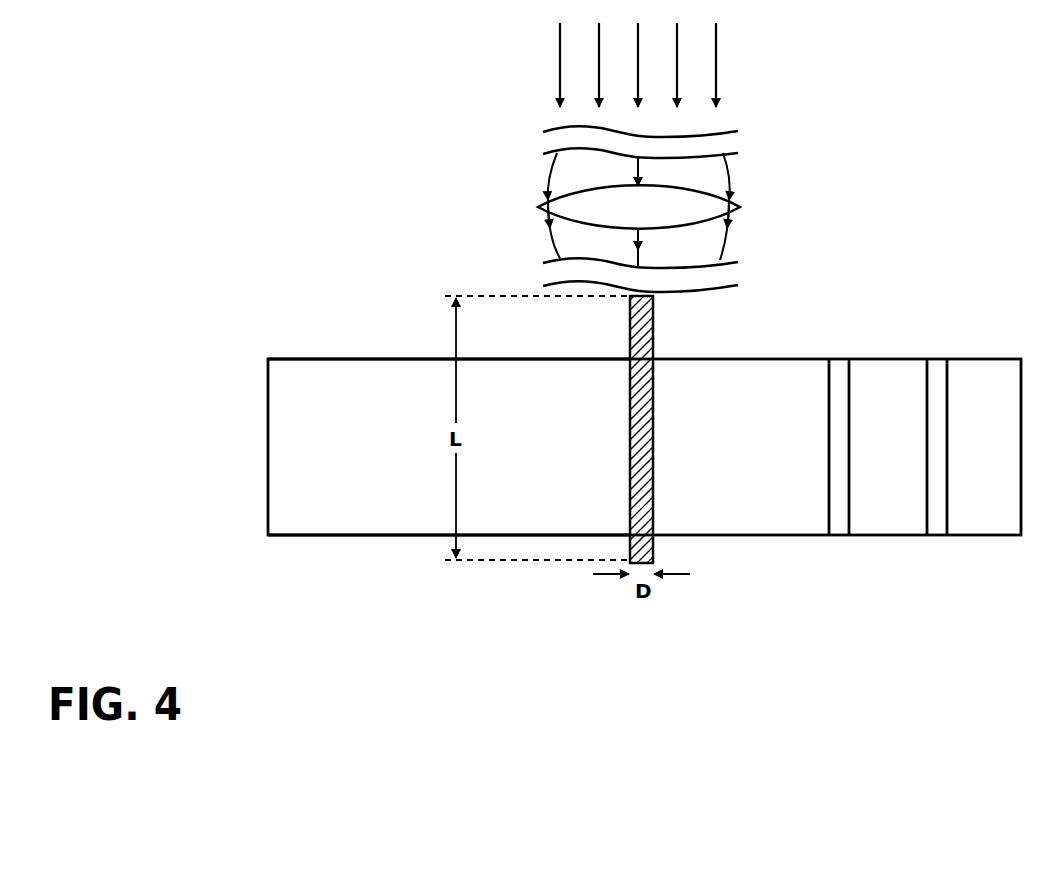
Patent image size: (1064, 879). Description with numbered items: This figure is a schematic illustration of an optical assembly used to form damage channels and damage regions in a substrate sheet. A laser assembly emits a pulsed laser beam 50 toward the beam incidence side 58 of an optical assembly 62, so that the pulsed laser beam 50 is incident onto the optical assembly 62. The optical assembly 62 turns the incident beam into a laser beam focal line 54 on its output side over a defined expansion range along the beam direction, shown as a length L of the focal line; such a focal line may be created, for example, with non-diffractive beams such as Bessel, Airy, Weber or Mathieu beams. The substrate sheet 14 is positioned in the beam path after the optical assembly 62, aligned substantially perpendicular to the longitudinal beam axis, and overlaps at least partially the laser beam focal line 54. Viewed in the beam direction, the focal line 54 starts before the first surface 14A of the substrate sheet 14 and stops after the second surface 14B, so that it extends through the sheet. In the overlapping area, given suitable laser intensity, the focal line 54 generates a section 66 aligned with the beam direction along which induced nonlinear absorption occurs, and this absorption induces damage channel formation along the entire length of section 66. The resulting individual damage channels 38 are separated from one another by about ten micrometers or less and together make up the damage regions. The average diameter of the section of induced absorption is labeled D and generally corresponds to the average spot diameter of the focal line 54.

The pulsed laser beam 50 is at (716, 73).
The optical assembly 62 is at (538, 207).
The beam incidence side 58 is at (730, 190).
The substrate sheet 14 is at (896, 380).
The first surface 14A is at (355, 357).
The second surface 14B is at (363, 536).
The damage channels 38 is at (839, 367).
The laser beam focal line 54 is at (590, 296).
The section 66 is at (675, 534).